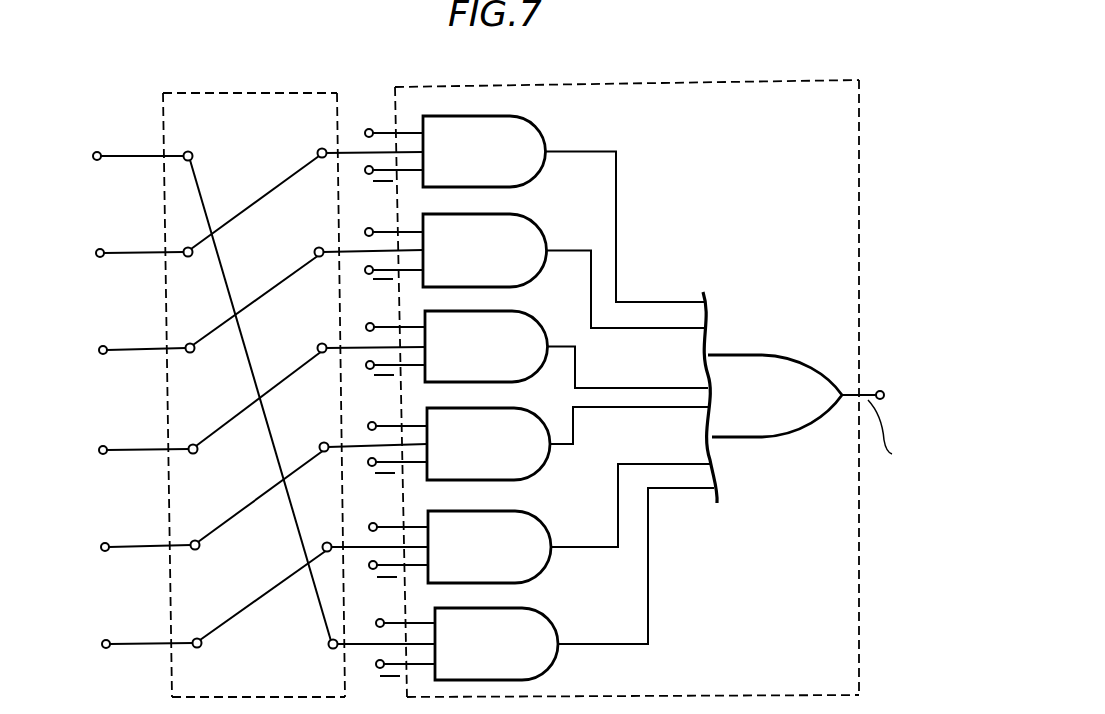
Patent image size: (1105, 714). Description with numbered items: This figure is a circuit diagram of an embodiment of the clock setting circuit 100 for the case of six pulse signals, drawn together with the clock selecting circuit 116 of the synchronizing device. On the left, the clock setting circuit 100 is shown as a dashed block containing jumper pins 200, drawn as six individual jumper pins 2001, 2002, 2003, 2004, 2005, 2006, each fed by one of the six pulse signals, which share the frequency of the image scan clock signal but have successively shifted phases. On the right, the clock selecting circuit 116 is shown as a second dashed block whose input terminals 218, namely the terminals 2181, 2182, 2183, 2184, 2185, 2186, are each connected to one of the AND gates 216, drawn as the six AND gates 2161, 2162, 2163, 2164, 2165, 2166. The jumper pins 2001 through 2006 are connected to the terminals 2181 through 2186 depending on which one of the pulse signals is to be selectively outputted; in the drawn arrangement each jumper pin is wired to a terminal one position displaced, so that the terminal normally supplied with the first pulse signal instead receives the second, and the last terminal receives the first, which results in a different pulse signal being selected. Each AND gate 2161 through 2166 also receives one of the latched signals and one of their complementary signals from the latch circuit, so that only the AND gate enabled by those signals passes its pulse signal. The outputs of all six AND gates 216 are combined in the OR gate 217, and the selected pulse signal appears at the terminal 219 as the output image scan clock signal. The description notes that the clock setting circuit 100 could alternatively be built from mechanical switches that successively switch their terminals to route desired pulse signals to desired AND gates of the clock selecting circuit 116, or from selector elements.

The clock setting circuit 100 is at (337, 93).
The clock selecting circuit 116 is at (744, 80).
The jumper pins 200 is at (212, 382).
The jumper pin 2001 is at (191, 153).
The jumper pin 2002 is at (183, 249).
The jumper pin 2003 is at (190, 344).
The jumper pin 2004 is at (193, 445).
The jumper pin 2005 is at (195, 541).
The jumper pin 2006 is at (197, 639).
The terminals 218 is at (342, 384).
The terminal 2181 is at (322, 150).
The terminal 2182 is at (319, 248).
The terminal 2183 is at (322, 344).
The terminal 2184 is at (324, 443).
The terminal 2185 is at (327, 542).
The terminal 2186 is at (329, 644).
The AND gates 216 is at (539, 399).
The AND gate 2161 is at (540, 130).
The AND gate 2162 is at (527, 222).
The AND gate 2163 is at (514, 310).
The AND gate 2164 is at (503, 404).
The AND gate 2165 is at (521, 505).
The AND gate 2166 is at (534, 606).
The OR gate 217 is at (768, 353).
The terminal 219 is at (882, 390).